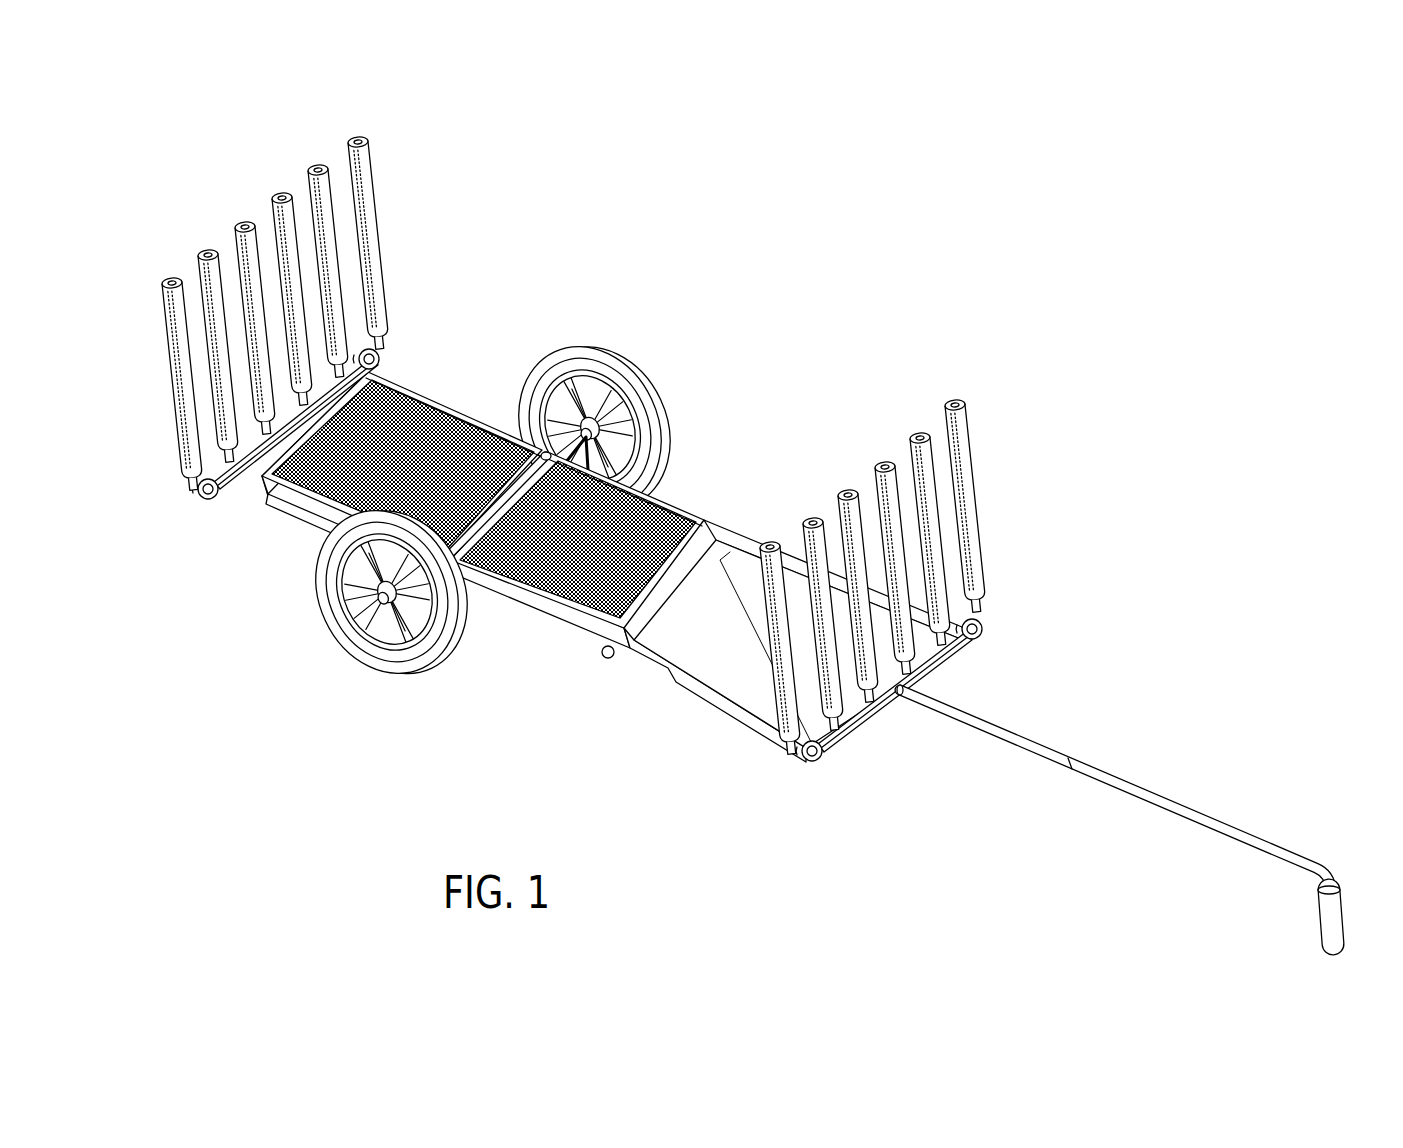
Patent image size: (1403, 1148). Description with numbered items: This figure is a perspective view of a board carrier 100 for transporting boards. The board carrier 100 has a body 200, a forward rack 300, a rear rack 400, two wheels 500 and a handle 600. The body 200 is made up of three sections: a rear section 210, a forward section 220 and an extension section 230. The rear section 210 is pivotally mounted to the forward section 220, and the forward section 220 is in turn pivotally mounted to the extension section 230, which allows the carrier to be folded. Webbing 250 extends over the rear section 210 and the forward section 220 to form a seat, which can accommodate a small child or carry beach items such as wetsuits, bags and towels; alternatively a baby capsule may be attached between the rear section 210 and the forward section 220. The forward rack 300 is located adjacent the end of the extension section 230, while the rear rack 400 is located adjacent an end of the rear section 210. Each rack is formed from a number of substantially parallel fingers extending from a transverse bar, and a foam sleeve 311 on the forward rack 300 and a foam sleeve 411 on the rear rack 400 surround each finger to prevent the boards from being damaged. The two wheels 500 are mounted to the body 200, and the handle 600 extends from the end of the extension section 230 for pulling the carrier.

The board carrier 100 is at (777, 317).
The body 200 is at (686, 493).
The rear section 210 is at (450, 398).
The forward section 220 is at (676, 519).
The extension section 230 is at (793, 578).
The webbing 250 is at (527, 567).
The forward rack 300 is at (996, 460).
The foam sleeve 311 is at (833, 633).
The rear rack 400 is at (400, 218).
The foam sleeve 411 is at (272, 200).
The wheels 500 is at (581, 351).
The handle 600 is at (1186, 789).